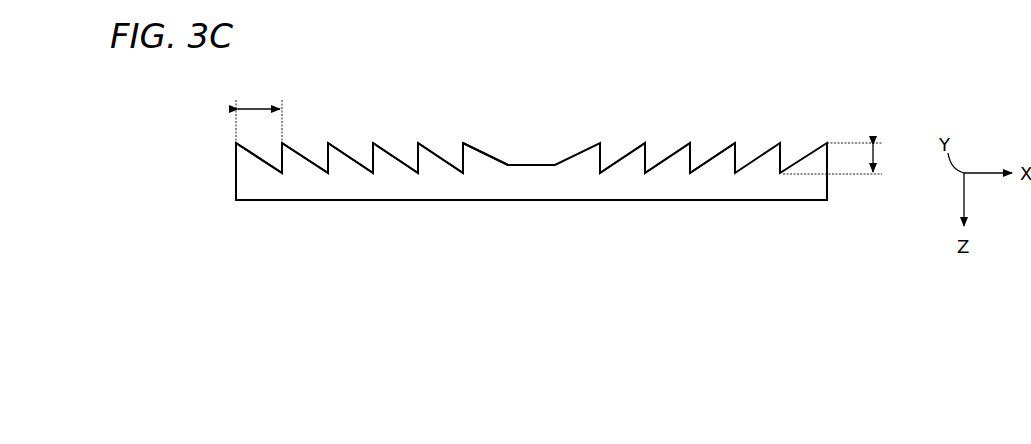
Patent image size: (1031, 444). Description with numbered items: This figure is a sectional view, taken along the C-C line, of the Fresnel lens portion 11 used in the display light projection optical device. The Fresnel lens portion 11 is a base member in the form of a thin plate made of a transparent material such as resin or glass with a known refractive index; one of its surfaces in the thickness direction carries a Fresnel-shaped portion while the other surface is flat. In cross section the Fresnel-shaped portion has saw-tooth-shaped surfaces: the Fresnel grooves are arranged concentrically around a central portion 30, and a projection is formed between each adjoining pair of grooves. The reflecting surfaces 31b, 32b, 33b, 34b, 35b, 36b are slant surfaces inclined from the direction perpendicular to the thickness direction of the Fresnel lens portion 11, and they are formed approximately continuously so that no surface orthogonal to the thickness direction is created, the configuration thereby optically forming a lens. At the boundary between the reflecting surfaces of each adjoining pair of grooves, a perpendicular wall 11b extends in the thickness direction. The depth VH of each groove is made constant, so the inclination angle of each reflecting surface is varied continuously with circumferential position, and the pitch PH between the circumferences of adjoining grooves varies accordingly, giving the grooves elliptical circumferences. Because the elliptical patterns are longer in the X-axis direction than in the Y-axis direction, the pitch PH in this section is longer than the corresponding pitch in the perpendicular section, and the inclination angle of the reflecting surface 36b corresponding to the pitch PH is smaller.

The Fresnel lens portion 11 is at (753, 201).
The perpendicular wall 11b is at (610, 148).
The central portion 30 is at (532, 165).
The reflecting surface 31b is at (477, 148).
The reflecting surface 32b is at (437, 148).
The reflecting surface 33b is at (388, 148).
The reflecting surface 34b is at (340, 147).
The reflecting surface 35b is at (287, 147).
The reflecting surface 36b is at (249, 147).
The pitch PH is at (259, 114).
The depth VH is at (847, 158).